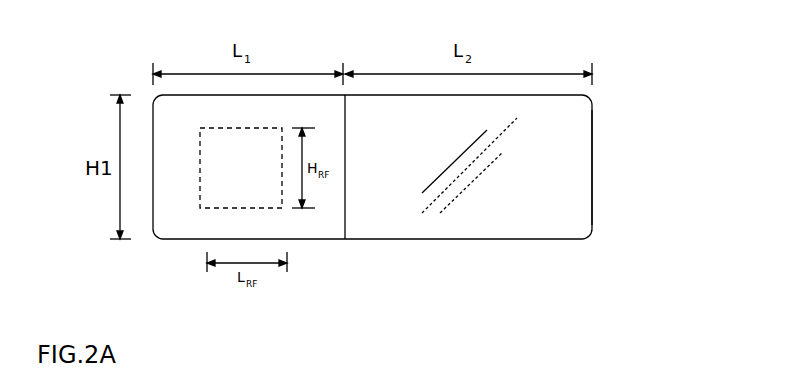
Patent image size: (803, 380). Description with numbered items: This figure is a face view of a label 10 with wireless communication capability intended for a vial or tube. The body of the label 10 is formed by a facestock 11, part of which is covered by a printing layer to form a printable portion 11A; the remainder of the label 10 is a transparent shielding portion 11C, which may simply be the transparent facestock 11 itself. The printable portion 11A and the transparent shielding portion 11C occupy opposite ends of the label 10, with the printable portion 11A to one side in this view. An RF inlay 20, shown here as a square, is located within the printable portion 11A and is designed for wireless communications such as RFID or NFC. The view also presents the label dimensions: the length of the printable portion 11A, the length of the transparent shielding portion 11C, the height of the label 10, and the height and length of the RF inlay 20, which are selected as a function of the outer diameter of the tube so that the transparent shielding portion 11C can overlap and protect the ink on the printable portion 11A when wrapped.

The label 10 is at (652, 155).
The facestock 11 is at (480, 217).
The printable portion 11A is at (170, 228).
The transparent shielding portion 11C is at (571, 217).
The RF inlay 20 is at (273, 200).